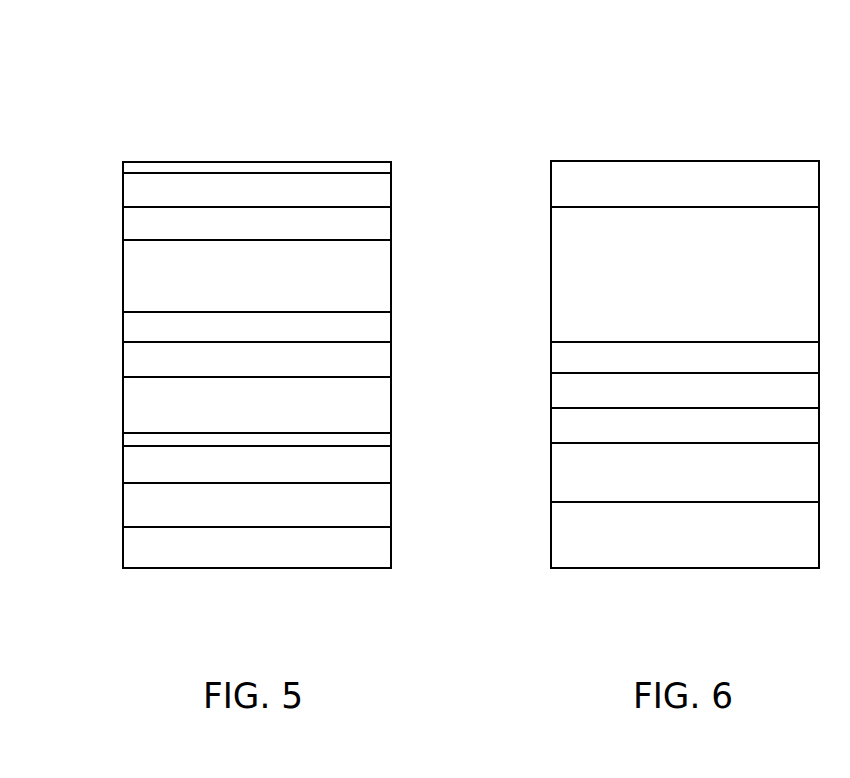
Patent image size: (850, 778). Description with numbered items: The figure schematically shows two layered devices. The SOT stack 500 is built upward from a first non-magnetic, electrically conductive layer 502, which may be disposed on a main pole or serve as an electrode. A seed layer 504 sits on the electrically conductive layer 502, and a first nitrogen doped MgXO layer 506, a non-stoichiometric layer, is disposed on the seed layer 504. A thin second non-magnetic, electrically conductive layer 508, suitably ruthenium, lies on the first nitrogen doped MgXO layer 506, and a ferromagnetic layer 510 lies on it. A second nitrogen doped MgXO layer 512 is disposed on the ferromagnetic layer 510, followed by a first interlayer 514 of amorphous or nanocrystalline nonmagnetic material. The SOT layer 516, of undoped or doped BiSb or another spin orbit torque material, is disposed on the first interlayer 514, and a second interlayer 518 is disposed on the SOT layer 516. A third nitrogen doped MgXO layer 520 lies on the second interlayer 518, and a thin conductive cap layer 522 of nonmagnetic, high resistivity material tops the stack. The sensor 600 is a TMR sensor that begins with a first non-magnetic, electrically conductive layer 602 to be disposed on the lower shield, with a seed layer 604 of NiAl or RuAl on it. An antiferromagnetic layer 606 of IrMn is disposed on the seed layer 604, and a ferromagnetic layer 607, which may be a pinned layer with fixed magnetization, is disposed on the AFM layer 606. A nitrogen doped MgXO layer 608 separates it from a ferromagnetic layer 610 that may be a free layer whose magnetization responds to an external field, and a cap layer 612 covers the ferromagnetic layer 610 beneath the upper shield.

In FIG. 5, the SOT stack 500 is at (155, 115).
In FIG. 5, the first non-magnetic, electrically conductive layer 502 is at (235, 558).
In FIG. 5, the seed layer 504 is at (235, 516).
In FIG. 5, the first nitrogen doped MgXO layer 506 is at (235, 476).
In FIG. 5, the second non-magnetic, electrically conductive layer 508 is at (378, 440).
In FIG. 5, the ferromagnetic layer 510 is at (235, 416).
In FIG. 5, the second nitrogen doped MgXO layer 512 is at (235, 370).
In FIG. 5, the first interlayer 514 is at (235, 338).
In FIG. 5, the SOT layer 516 is at (235, 286).
In FIG. 5, the second interlayer 518 is at (235, 234).
In FIG. 5, the third nitrogen doped MgXO layer 520 is at (235, 201).
In FIG. 5, the conductive cap layer 522 is at (378, 167).
In FIG. 6, the sensor 600 is at (562, 115).
In FIG. 6, the first non-magnetic, electrically conductive layer 602 is at (661, 546).
In FIG. 6, the seed layer 604 is at (661, 484).
In FIG. 6, the antiferromagnetic (AFM) layer 606 is at (661, 436).
In FIG. 6, the ferromagnetic layer 607 is at (661, 402).
In FIG. 6, the nitrogen doped MgXO layer 608 is at (661, 368).
In FIG. 6, the ferromagnetic layer 610 is at (661, 286).
In FIG. 6, the cap layer 612 is at (661, 196).